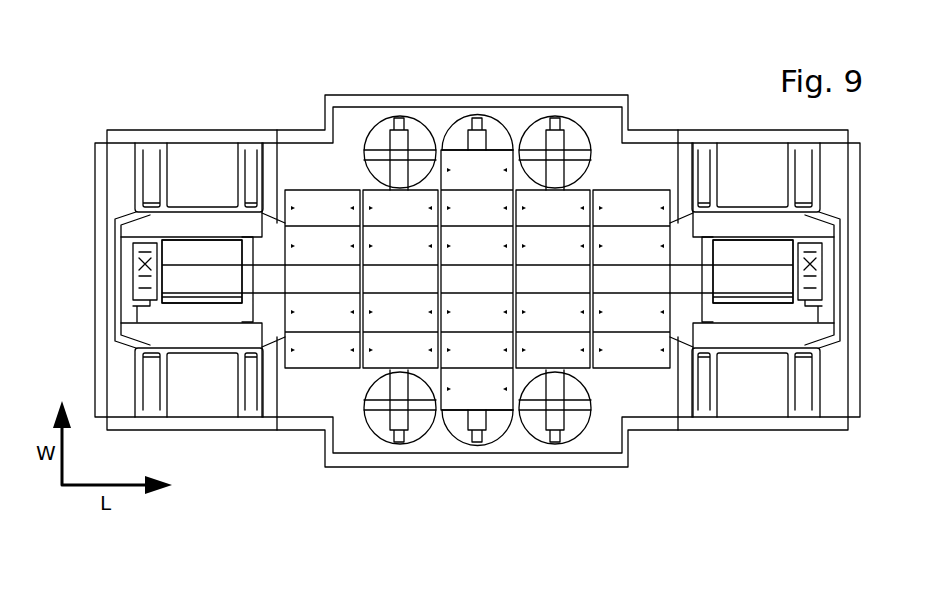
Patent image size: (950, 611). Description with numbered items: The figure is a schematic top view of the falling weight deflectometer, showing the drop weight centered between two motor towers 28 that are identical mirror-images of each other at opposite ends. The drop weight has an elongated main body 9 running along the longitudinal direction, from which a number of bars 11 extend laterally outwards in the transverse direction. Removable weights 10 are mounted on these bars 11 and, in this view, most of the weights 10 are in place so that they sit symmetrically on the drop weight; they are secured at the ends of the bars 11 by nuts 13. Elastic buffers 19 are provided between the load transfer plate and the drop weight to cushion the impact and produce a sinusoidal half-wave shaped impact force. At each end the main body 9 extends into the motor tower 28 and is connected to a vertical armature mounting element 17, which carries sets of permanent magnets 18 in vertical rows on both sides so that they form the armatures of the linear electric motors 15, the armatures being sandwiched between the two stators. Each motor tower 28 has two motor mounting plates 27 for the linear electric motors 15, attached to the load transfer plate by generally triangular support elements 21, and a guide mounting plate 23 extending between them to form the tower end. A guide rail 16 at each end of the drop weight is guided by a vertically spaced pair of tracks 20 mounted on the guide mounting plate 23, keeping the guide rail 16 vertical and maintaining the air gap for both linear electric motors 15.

The main body 9 is at (335, 267).
The removable weights 10 is at (628, 212).
The bars 11 is at (400, 162).
The nuts 13 is at (557, 125).
The linear electric motors 15 is at (170, 312).
The guide rail 16 is at (797, 287).
The armature mounting element 17 is at (197, 285).
The permanent magnets 18 is at (143, 280).
The elastic buffers 19 is at (424, 142).
The tracks 20 is at (827, 258).
The support elements 21 is at (800, 387).
The guide mounting plate 23 is at (823, 245).
The motor mounting plates 27 is at (758, 340).
The motor tower 28 is at (195, 405).